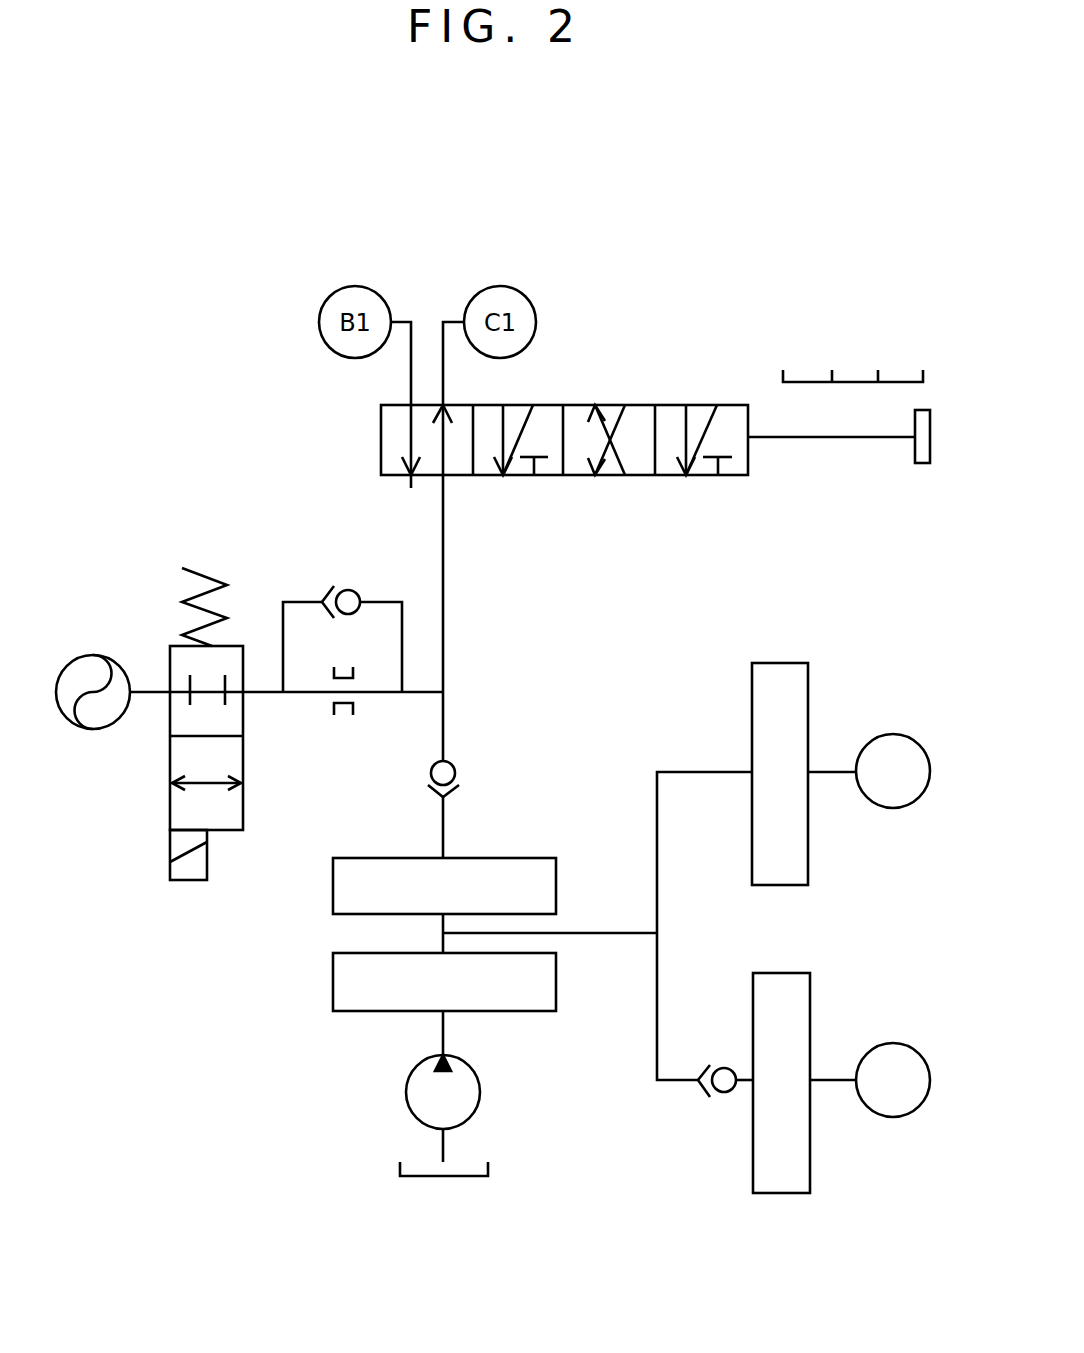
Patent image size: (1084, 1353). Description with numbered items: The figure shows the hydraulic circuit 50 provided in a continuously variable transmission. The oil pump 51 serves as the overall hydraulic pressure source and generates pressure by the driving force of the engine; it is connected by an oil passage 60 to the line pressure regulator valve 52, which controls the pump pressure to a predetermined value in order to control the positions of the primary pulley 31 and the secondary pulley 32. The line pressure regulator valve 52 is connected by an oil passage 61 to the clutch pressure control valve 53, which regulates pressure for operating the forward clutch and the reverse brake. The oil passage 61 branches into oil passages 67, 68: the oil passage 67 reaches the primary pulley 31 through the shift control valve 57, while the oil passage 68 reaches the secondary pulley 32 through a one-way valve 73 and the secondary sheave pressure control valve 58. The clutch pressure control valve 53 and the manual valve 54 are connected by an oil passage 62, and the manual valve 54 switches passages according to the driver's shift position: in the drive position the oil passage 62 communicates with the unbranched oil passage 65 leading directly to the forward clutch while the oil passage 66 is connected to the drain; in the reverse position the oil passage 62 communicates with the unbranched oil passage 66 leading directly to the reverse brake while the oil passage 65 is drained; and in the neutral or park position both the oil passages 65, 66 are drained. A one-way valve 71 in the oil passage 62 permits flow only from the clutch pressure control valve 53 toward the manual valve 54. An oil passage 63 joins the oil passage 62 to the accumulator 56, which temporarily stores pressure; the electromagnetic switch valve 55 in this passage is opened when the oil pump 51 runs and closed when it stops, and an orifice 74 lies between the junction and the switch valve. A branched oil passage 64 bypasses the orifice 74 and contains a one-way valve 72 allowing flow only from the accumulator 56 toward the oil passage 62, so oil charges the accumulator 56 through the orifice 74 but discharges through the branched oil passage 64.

The primary pulley 31 is at (888, 733).
The secondary pulley 32 is at (892, 1120).
The hydraulic circuit 50 is at (808, 277).
The oil pump 51 is at (482, 1086).
The line pressure regulator valve 52 is at (558, 986).
The clutch pressure control valve 53 is at (558, 886).
The manual valve 54 is at (577, 403).
The electromagnetic switch valve 55 is at (170, 758).
The accumulator 56 is at (73, 657).
The shift control valve 57 is at (778, 665).
The secondary sheave pressure control valve 58 is at (783, 1193).
The oil passage 60 is at (442, 1034).
The oil passage 61 is at (433, 923).
The oil passage 62 is at (445, 643).
The oil passage 63 is at (267, 695).
The branched oil passage 64 is at (380, 600).
The oil passage 65 is at (443, 383).
The oil passage 66 is at (411, 383).
The oil passage 67 is at (695, 770).
The oil passage 68 is at (672, 1083).
The one-way valve 71 is at (455, 762).
The one-way valve 72 is at (350, 588).
The one-way valve 73 is at (727, 1093).
The orifice 74 is at (343, 707).